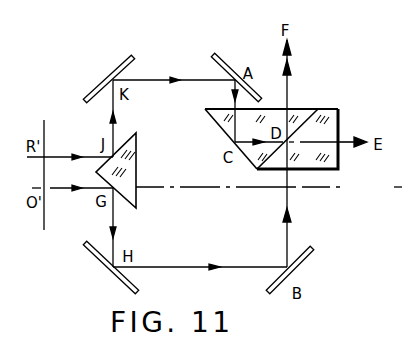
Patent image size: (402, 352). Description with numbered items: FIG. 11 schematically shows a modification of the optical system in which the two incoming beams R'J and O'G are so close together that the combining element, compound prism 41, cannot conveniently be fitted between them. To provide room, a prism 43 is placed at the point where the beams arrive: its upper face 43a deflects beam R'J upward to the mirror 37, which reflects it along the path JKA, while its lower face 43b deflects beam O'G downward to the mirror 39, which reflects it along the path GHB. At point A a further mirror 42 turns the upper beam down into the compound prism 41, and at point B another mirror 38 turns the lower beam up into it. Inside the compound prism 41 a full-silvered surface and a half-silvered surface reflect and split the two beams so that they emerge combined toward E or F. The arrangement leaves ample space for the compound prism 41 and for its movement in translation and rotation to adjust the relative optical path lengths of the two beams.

The mirror 37 is at (105, 83).
The mirror 38 is at (301, 249).
The mirror 39 is at (107, 268).
The compound prism 41 is at (314, 101).
The mirror 42 is at (217, 57).
The prism 43 is at (142, 175).
The prism face 43a is at (128, 135).
The prism face 43b is at (125, 204).